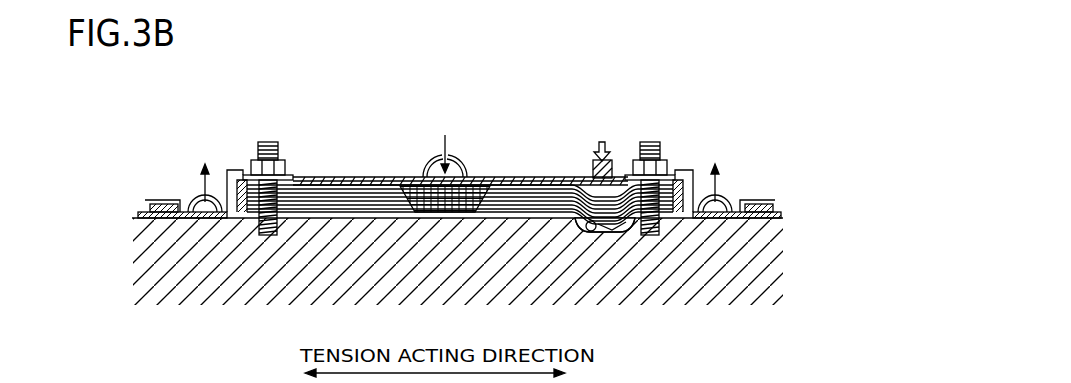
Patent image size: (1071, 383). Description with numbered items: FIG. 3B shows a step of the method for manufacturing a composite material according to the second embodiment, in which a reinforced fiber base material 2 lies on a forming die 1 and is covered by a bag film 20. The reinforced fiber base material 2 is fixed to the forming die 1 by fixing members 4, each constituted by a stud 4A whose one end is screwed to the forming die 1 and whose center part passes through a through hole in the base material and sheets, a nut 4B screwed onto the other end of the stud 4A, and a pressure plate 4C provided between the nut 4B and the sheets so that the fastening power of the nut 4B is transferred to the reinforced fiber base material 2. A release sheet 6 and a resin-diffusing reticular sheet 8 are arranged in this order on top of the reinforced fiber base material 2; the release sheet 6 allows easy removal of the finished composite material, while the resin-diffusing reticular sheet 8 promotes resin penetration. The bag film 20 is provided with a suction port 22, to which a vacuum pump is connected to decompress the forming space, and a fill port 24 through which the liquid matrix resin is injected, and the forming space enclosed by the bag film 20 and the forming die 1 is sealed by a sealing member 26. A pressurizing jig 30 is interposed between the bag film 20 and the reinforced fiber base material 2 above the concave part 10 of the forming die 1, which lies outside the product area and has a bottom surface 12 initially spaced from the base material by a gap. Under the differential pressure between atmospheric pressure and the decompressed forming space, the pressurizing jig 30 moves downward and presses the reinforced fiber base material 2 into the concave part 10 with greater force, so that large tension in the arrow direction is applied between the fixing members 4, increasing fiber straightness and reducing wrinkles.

The forming die 1 is at (770, 277).
The reinforced fiber base material 2 is at (512, 195).
The fixing member 4 is at (432, 153).
The stud 4A is at (267, 142).
The nut 4B is at (251, 168).
The pressure plate 4C is at (243, 172).
The release sheet 6 is at (342, 180).
The resin-diffusing reticular sheet 8 is at (368, 180).
The concave part 10 is at (617, 228).
The bottom surface 12 is at (591, 231).
The bag film 20 is at (310, 176).
The suction port 22 is at (192, 196).
The fill port 24 is at (468, 160).
The sealing member 26 is at (152, 206).
The pressurizing jig 30 is at (594, 168).